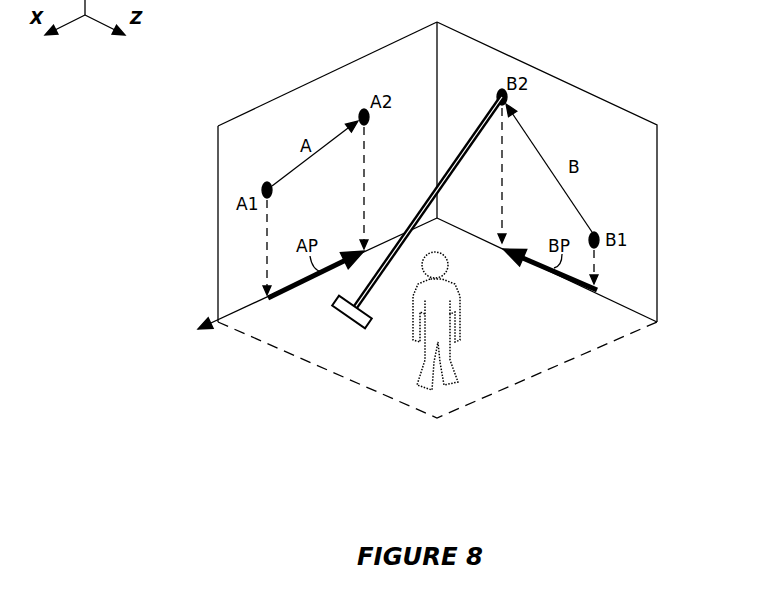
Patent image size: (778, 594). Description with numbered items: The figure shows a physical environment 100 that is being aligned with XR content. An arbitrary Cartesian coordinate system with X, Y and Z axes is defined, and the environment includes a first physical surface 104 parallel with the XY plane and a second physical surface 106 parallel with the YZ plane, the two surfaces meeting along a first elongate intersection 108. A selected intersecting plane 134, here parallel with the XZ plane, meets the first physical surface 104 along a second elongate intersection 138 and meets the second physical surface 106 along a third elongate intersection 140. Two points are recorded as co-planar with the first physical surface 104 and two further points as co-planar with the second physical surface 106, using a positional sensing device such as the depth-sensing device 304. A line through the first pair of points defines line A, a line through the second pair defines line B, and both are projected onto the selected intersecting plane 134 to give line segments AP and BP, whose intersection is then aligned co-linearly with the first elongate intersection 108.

The physical environment 100 is at (288, 40).
The first physical surface 104 is at (218, 148).
The second physical surface 106 is at (567, 80).
The first elongate intersection 108 is at (437, 60).
The selected intersecting plane 134 is at (412, 413).
The second elongate intersection 138 is at (238, 308).
The third elongate intersection 140 is at (622, 305).
The depth-sensing device 304 is at (345, 322).